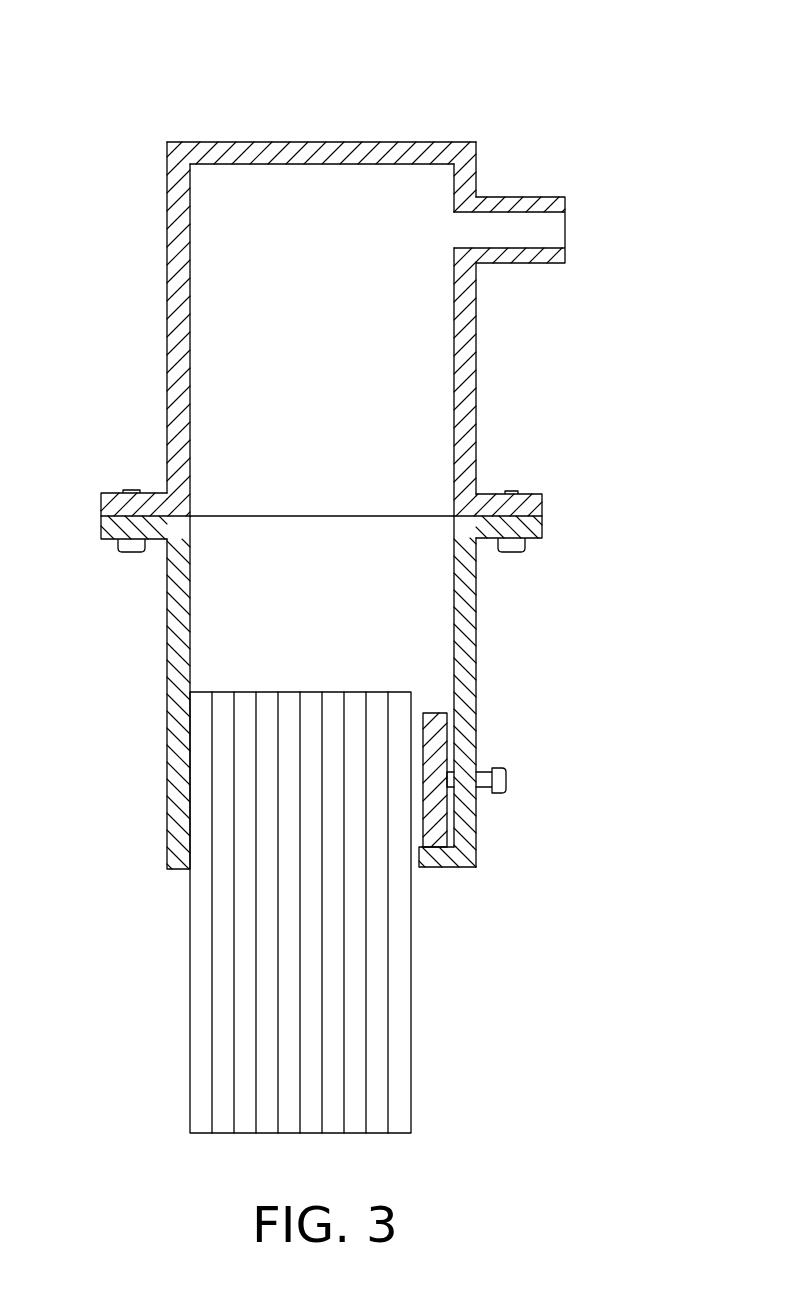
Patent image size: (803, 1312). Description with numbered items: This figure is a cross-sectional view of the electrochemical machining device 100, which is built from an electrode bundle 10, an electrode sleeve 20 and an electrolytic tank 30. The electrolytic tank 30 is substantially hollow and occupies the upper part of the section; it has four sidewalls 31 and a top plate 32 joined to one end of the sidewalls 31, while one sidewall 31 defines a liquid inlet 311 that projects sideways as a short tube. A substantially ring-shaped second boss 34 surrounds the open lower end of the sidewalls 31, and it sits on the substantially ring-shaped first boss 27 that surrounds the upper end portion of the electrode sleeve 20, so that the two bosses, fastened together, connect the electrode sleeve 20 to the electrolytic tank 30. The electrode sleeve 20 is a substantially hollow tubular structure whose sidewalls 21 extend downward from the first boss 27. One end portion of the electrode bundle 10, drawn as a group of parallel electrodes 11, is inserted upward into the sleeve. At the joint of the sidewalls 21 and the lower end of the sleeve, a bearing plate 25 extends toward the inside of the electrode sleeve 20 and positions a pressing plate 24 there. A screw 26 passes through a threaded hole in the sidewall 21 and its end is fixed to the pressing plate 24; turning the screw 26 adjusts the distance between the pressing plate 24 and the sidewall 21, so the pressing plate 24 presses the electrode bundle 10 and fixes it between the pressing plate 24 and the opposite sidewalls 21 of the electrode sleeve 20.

The electrochemical machining device 100 is at (347, 33).
The electrode bundle 10 is at (178, 1011).
The fins 11 is at (375, 960).
The electrode sleeve 20 is at (570, 593).
The sidewall 21 is at (457, 662).
The pressing plate 24 is at (433, 793).
The bearing plate 25 is at (430, 860).
The screw 26 is at (497, 768).
The first boss 27 is at (530, 528).
The electrolytic tank 30 is at (80, 198).
The sidewall 31 is at (182, 285).
The top plate 32 is at (233, 152).
The second boss 34 is at (117, 505).
The liquid inlet 311 is at (542, 233).